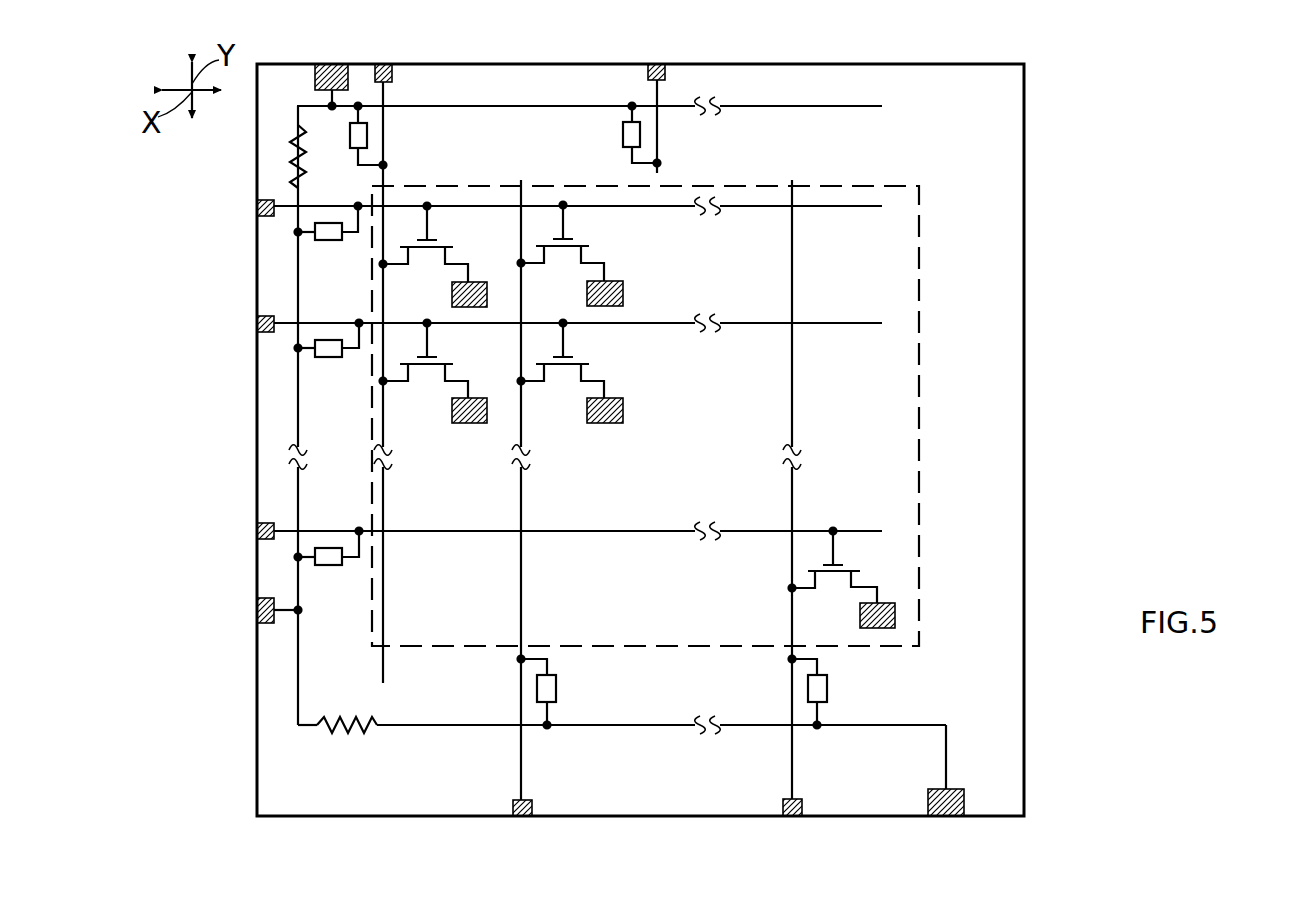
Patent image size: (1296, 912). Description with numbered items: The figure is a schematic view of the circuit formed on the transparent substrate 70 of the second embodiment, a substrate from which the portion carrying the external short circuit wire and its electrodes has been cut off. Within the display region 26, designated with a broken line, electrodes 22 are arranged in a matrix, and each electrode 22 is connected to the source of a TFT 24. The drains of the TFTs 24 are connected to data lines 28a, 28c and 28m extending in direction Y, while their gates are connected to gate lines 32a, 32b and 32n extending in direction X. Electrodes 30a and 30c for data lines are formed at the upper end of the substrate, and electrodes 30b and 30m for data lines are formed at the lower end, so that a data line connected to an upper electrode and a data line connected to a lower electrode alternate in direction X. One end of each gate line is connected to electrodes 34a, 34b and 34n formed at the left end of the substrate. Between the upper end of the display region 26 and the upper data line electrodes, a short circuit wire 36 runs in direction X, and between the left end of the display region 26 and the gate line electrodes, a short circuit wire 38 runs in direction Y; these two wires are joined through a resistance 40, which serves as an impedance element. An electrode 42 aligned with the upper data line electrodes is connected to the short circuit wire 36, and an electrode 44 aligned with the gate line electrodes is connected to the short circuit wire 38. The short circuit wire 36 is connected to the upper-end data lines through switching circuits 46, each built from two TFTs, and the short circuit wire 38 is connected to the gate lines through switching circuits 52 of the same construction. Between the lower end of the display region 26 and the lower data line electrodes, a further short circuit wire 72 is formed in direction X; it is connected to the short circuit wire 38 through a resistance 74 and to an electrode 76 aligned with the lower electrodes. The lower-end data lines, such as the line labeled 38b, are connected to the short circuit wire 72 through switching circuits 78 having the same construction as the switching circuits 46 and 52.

The electrode 22 is at (452, 293).
The TFT 24 is at (440, 243).
The display region 26 is at (920, 390).
The data line 28a is at (387, 95).
The data line 28c is at (653, 98).
The data line 28m is at (790, 762).
The electrode 30a is at (393, 63).
The electrode 30b is at (523, 820).
The electrode 30c is at (658, 63).
The electrode 30m is at (795, 817).
The gate line 32a is at (290, 210).
The gate line 32b is at (290, 327).
The gate line 32n is at (290, 530).
The electrode 34a is at (258, 213).
The electrode 34b is at (258, 332).
The electrode 34n is at (258, 545).
The short circuit wire 36 is at (785, 107).
The short circuit wire 38 is at (302, 495).
The test column line 38b is at (518, 768).
The resistance 40 is at (293, 138).
The electrode 42 is at (323, 63).
The electrode 44 is at (258, 620).
The switching circuit 46 is at (355, 138).
The switching circuit 52 is at (320, 242).
The transparent substrate 70 is at (1023, 418).
The short circuit wire 72 is at (415, 725).
The resistance 74 is at (347, 733).
The electrode 76 is at (953, 817).
The switching circuit 78 is at (557, 692).